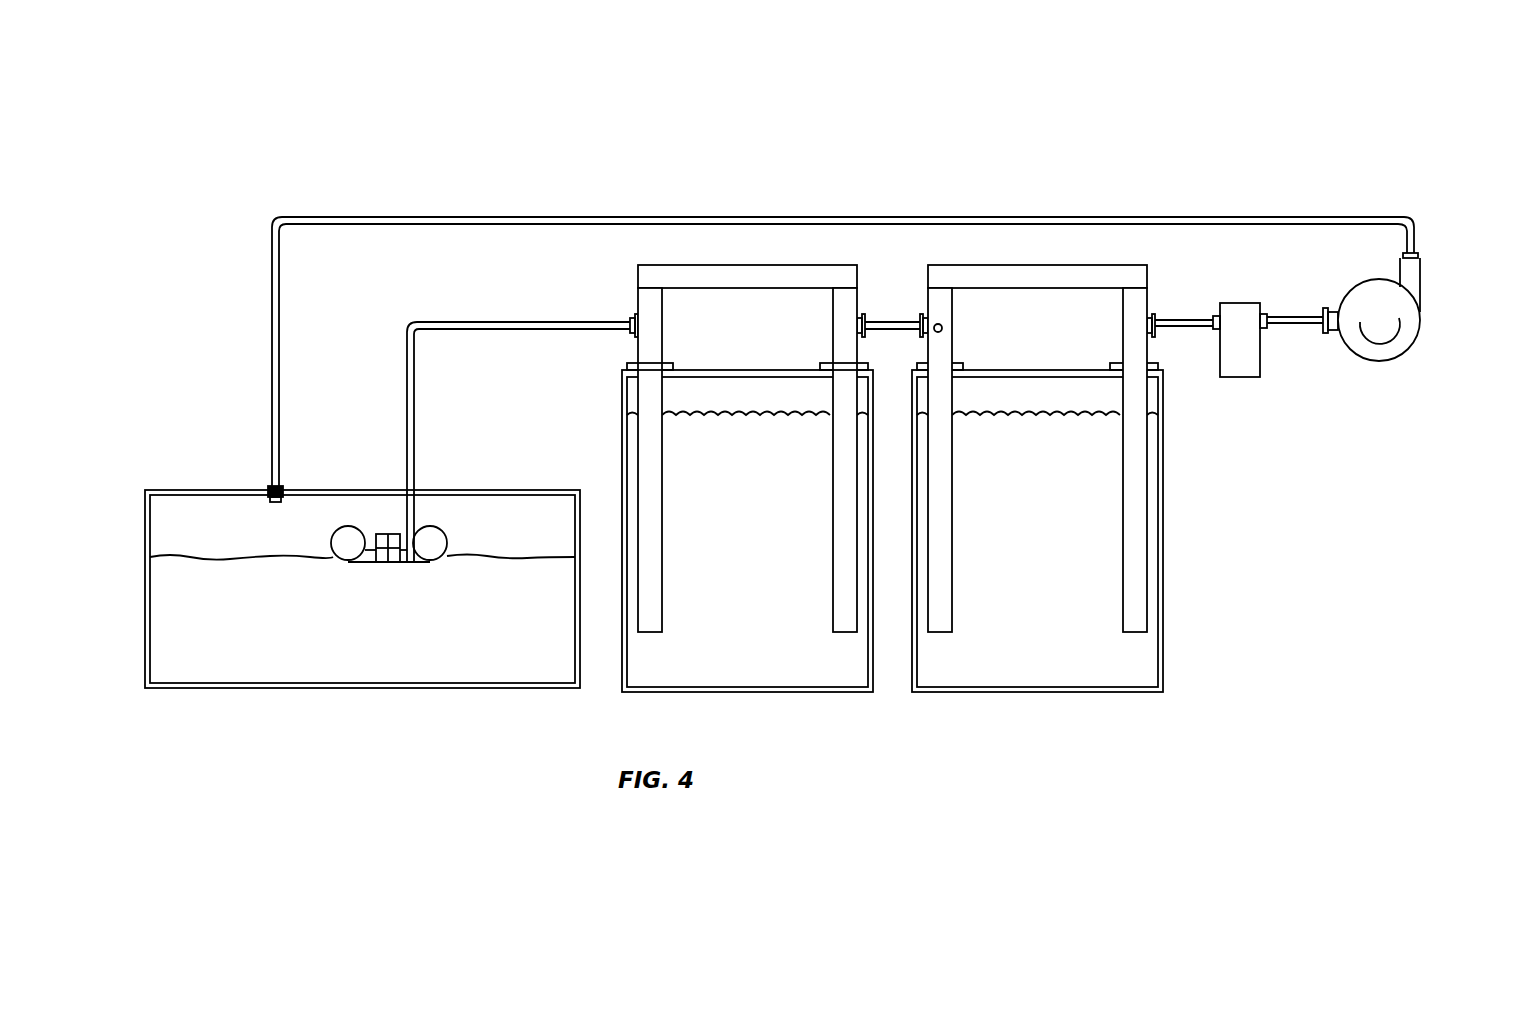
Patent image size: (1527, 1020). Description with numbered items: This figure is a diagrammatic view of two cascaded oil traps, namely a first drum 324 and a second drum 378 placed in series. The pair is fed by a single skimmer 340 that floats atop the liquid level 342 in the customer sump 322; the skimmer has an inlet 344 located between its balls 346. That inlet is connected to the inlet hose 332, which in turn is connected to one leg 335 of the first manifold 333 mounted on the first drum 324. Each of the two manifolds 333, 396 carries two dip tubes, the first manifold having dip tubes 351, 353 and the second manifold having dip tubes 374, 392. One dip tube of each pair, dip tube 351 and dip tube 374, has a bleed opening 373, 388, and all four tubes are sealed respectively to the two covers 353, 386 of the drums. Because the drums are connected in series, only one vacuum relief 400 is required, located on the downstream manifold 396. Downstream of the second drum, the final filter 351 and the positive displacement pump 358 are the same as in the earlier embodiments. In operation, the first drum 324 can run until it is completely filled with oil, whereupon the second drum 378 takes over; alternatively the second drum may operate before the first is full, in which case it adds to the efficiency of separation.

The customer sump 322 is at (413, 629).
The first drum 324 is at (778, 548).
The inlet hose 332 is at (415, 408).
The manifold 333 is at (717, 412).
The leg 335 is at (638, 300).
The skimmer 340 is at (384, 527).
The liquid level 342 is at (216, 547).
The inlet 344 is at (395, 533).
The balls 346 is at (445, 540).
The dip tube 351 is at (1238, 318).
The dip tube 353 is at (727, 363).
The positive displacement pump 358 is at (1420, 335).
The bleed opening 373 is at (652, 393).
The dip tube 374 is at (953, 510).
The second drum 378 is at (1060, 593).
The cover 386 is at (1015, 370).
The bleed opening 388 is at (941, 395).
The dip tube 392 is at (1120, 510).
The manifold 396 is at (1037, 412).
The vacuum relief 400 is at (942, 325).